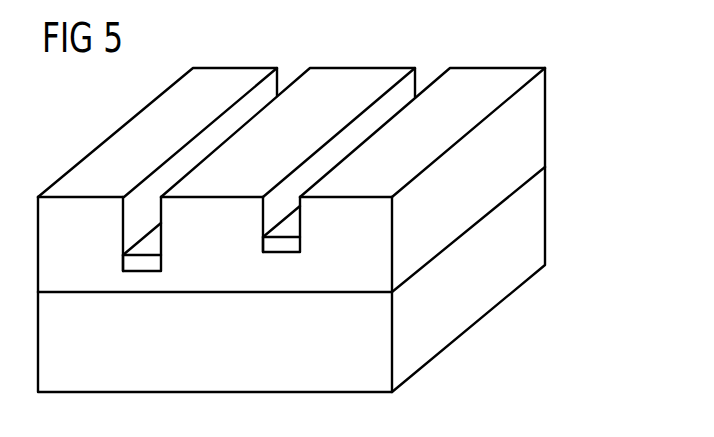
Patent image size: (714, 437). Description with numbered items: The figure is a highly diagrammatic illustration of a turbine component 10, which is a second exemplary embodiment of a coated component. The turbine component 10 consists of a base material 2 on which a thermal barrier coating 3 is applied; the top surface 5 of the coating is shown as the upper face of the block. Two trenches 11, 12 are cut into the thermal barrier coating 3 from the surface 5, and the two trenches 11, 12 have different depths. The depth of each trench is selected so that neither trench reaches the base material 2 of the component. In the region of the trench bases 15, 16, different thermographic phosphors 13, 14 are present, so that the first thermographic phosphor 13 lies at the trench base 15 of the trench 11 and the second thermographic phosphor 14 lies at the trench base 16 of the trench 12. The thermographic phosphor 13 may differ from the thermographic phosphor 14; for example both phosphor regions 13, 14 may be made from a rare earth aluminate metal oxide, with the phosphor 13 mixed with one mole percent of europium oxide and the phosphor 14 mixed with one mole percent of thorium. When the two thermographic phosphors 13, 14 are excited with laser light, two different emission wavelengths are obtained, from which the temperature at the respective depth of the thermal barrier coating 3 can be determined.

The turbine component 10 is at (330, 207).
The top surface 5 is at (487, 83).
The thermal barrier coating 3 is at (533, 125).
The base material 2 is at (533, 228).
The trench 11 is at (151, 191).
The trench 12 is at (291, 192).
The thermographic phosphor 13 is at (153, 262).
The thermographic phosphor 14 is at (297, 240).
The trench base 15 is at (130, 263).
The trench base 16 is at (275, 244).